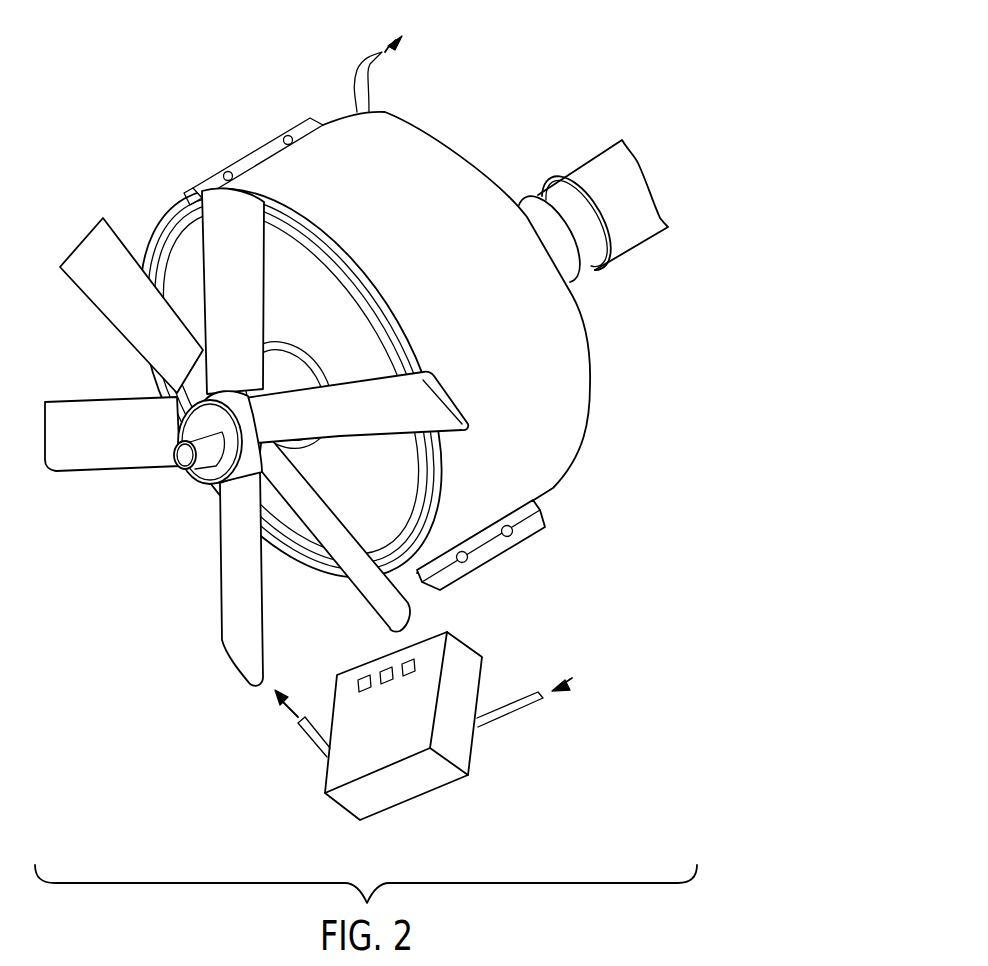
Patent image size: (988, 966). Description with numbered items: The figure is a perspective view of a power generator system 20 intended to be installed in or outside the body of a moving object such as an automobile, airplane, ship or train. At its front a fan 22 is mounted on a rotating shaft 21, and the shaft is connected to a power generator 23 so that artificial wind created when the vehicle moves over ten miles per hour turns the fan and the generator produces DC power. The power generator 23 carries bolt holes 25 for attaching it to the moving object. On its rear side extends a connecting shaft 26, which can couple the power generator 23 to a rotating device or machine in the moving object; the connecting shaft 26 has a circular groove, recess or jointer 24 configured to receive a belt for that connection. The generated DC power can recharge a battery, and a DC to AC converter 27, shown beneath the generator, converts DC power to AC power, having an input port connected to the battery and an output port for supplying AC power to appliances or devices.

The power generator system 20 is at (124, 201).
The rotating shaft 21 is at (187, 421).
The fan 22 is at (232, 563).
The power generator 23 is at (573, 378).
The jointer 24 is at (591, 260).
The bolt holes 25 is at (510, 537).
The connecting shaft 26 is at (633, 175).
The DC to AC converter 27 is at (438, 790).